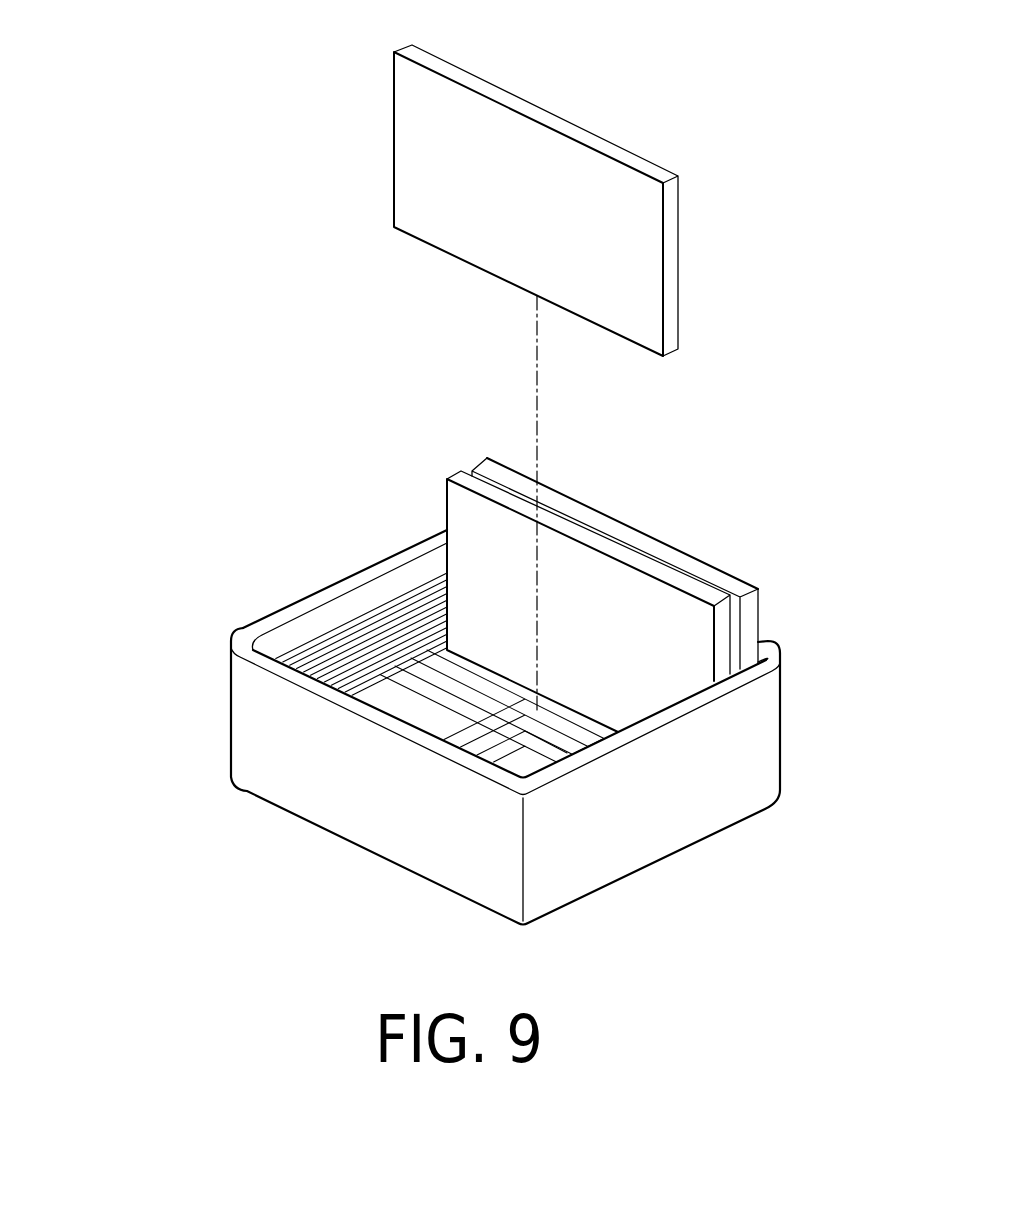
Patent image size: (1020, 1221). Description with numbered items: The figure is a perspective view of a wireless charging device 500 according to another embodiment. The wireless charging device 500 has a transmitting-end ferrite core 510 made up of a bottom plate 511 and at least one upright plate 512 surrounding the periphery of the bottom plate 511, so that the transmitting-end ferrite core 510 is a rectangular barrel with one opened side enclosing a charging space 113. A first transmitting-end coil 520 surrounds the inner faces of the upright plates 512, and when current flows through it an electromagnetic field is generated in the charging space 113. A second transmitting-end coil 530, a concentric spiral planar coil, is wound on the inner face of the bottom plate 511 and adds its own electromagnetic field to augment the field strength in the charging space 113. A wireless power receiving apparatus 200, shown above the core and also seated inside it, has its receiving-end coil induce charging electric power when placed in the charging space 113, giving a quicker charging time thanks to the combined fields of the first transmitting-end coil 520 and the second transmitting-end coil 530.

The wireless power receiving apparatus 200 is at (542, 120).
The wireless charging device 500 is at (415, 774).
The transmitting-end ferrite core 510 is at (313, 808).
The bottom plate 511 is at (410, 678).
The upright plate 512 is at (262, 622).
The first transmitting-end coil 520 is at (447, 587).
The second transmitting-end coil 530 is at (577, 727).
The charging space 113 is at (440, 704).